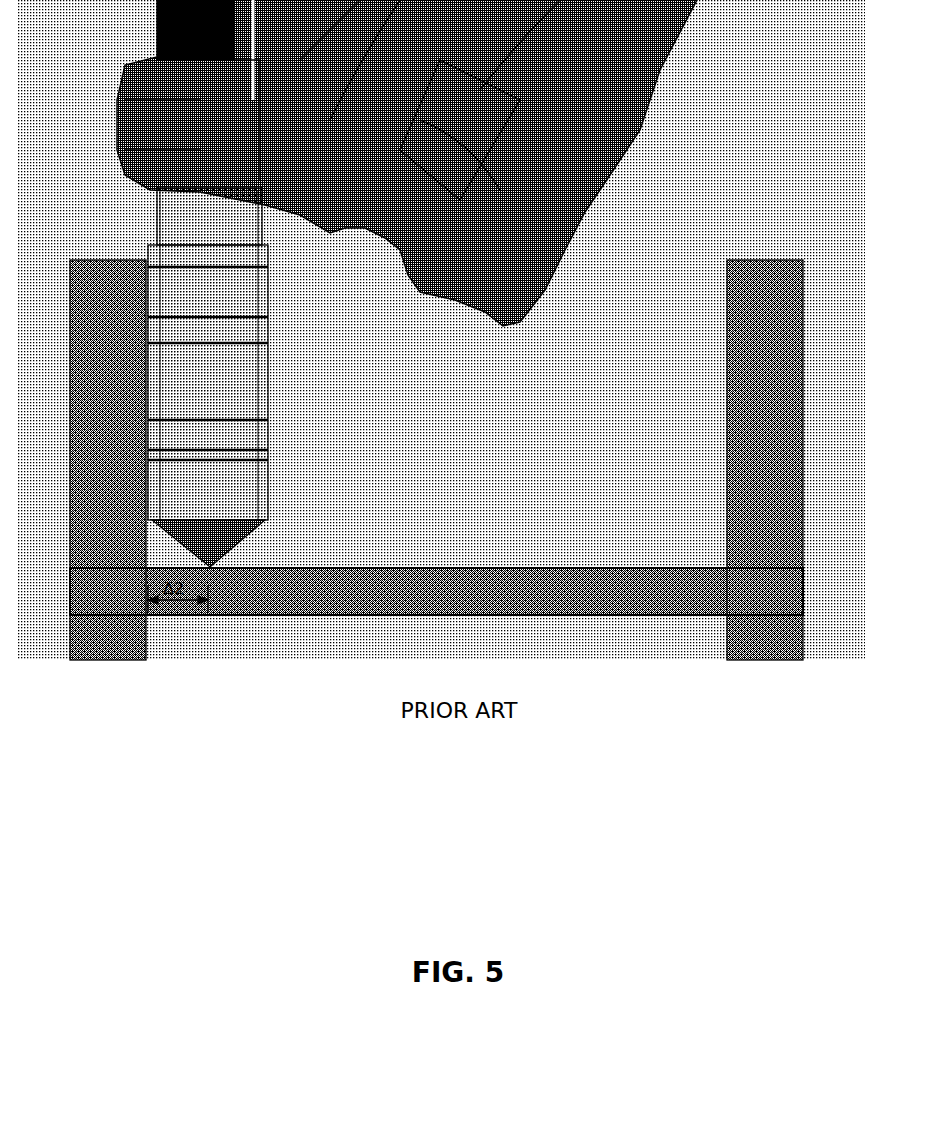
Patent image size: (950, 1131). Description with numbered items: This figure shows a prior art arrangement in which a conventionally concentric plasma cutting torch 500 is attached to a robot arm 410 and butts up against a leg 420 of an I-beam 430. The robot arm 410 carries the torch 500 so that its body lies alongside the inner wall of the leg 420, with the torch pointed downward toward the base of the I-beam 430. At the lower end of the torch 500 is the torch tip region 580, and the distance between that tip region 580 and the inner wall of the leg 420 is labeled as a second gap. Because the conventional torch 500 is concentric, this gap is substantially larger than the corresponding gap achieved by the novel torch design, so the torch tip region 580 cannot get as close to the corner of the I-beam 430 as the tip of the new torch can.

The robot arm 410 is at (282, 213).
The leg 420 is at (108, 258).
The I-beam 430 is at (480, 553).
The conventional plasma cutting torch 500 is at (270, 385).
The torch tip region 580 is at (218, 566).